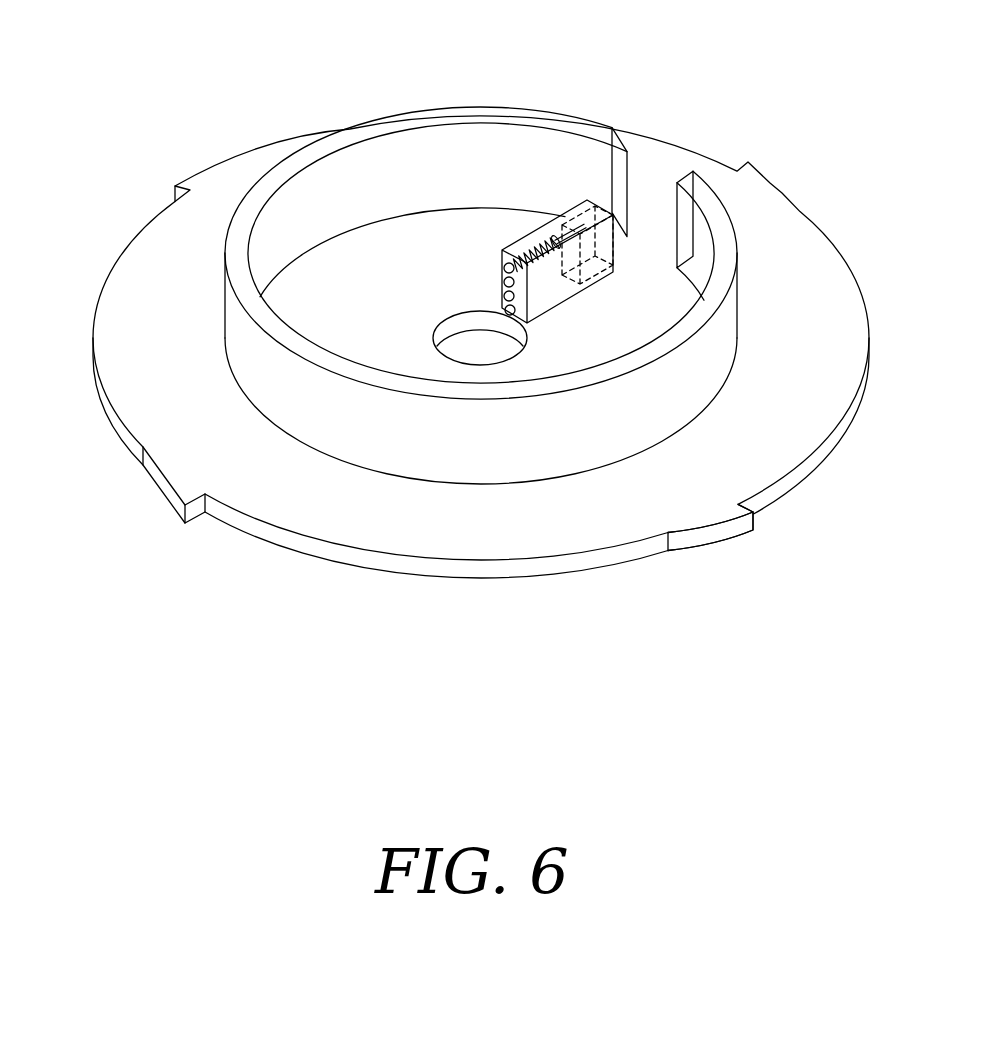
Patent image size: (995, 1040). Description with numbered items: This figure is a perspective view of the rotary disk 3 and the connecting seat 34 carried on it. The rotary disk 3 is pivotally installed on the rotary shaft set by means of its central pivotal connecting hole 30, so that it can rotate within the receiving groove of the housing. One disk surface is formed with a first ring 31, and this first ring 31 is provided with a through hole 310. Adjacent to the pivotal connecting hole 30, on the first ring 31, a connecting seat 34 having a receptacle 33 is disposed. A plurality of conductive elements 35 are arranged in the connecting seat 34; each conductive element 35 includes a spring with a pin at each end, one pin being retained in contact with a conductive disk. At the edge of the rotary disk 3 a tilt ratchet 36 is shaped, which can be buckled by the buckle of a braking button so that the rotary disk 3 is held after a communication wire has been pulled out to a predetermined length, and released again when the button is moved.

The rotary disk 3 is at (792, 237).
The pivotal connecting hole 30 is at (460, 342).
The first ring 31 is at (458, 447).
The through hole 310 is at (653, 193).
The receptacle 33 is at (588, 197).
The connecting seat 34 is at (525, 243).
The conductive element 35 is at (505, 266).
The tilt ratchet 36 is at (732, 530).